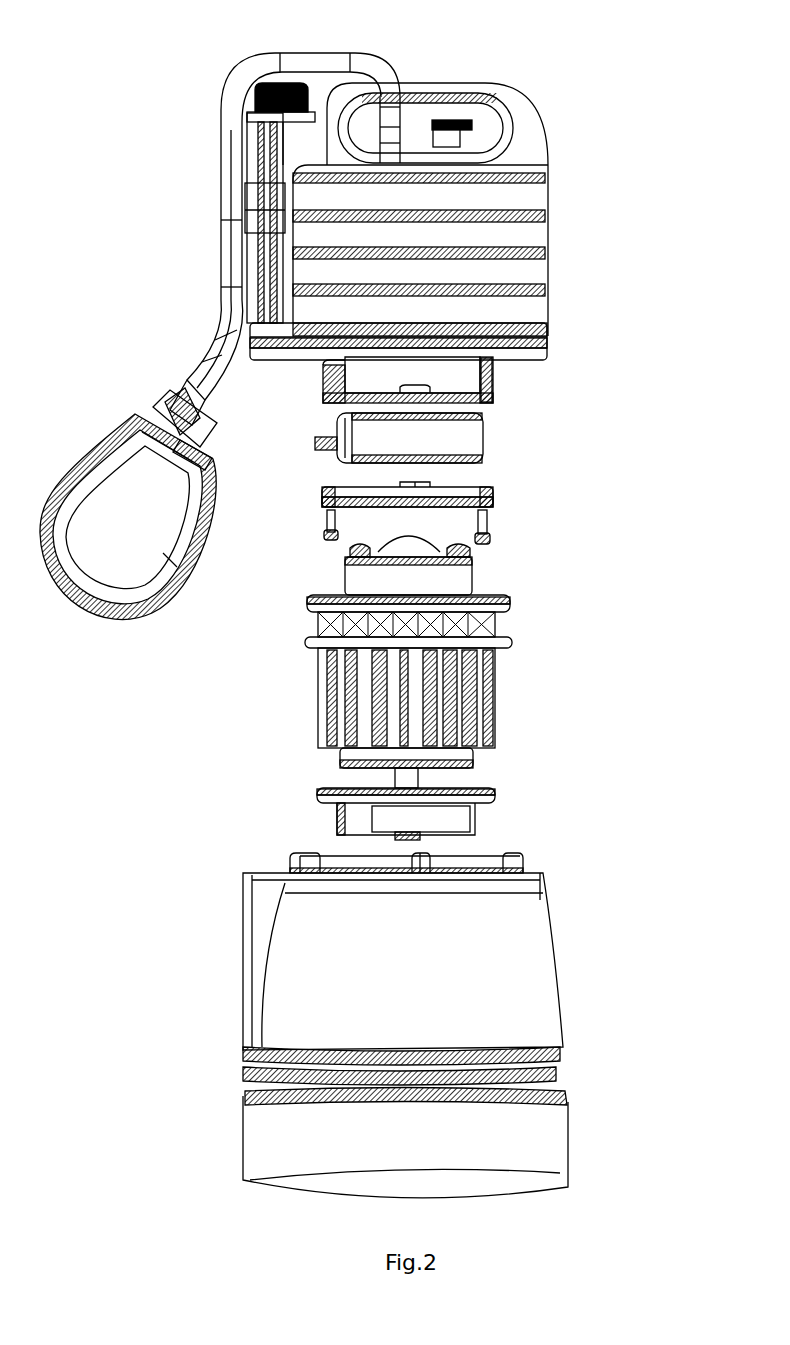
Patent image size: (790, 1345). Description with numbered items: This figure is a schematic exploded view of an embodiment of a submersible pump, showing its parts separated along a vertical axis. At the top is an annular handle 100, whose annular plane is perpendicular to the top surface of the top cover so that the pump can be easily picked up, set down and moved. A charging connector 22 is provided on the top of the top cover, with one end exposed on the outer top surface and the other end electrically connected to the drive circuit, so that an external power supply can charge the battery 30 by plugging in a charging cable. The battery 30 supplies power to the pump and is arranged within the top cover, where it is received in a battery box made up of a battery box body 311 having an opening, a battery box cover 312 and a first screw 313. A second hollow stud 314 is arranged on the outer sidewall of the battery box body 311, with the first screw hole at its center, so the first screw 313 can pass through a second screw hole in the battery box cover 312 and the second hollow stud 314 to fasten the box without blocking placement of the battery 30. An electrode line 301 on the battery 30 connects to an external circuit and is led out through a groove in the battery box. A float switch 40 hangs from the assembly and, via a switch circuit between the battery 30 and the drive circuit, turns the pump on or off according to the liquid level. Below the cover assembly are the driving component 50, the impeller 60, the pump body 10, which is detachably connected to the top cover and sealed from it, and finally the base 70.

The annular handle 100 is at (497, 92).
The charging connector 22 is at (473, 123).
The float switch 40 is at (175, 395).
The battery box body 311 is at (480, 400).
The second hollow stud 314 is at (490, 385).
The battery 30 is at (482, 434).
The electrode line 301 is at (316, 443).
The battery box cover 312 is at (490, 490).
The first screw 313 is at (487, 540).
The driving component 50 is at (463, 720).
The impeller 60 is at (455, 820).
The pump body 10 is at (489, 983).
The base 70 is at (522, 1133).